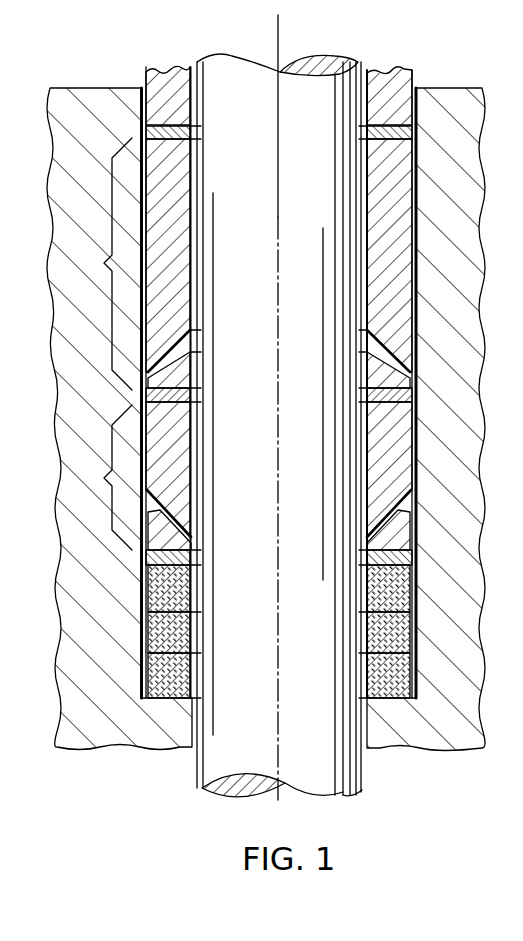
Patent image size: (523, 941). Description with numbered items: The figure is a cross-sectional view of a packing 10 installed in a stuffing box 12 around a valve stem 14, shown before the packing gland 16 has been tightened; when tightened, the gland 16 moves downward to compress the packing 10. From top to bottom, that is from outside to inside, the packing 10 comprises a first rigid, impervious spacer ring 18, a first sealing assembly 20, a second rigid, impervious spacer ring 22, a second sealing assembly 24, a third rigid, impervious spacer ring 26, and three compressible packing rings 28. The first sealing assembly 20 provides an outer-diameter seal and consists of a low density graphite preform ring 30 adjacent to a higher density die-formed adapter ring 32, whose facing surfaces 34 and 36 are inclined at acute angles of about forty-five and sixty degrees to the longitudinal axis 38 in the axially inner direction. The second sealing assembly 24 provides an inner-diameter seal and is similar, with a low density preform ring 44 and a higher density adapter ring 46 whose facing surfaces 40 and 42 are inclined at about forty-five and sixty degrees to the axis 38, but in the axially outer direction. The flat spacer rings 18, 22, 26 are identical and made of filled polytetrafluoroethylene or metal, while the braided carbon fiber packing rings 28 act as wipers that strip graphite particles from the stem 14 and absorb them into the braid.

The packing 10 is at (293, 365).
The stuffing box 12 is at (472, 418).
The stem 14 is at (347, 251).
The packing gland 16 is at (390, 83).
The first rigid, impervious spacer ring 18 is at (147, 128).
The first sealing assembly 20 is at (101, 264).
The second rigid, impervious spacer ring 22 is at (147, 398).
The second sealing assembly 24 is at (102, 477).
The third rigid, impervious spacer ring 26 is at (148, 562).
The compressible packing rings 28 is at (150, 662).
The low density graphite preform ring 30 is at (403, 178).
The higher density graphite die-formed adapter ring 32 is at (410, 392).
The facing surface 34 is at (396, 344).
The facing surface 36 is at (400, 357).
The longitudinal axis 38 is at (281, 159).
The facing surface 40 is at (413, 498).
The facing surface 42 is at (410, 508).
The low density graphite preform ring 44 is at (407, 460).
The higher density graphite adapter ring 46 is at (413, 542).